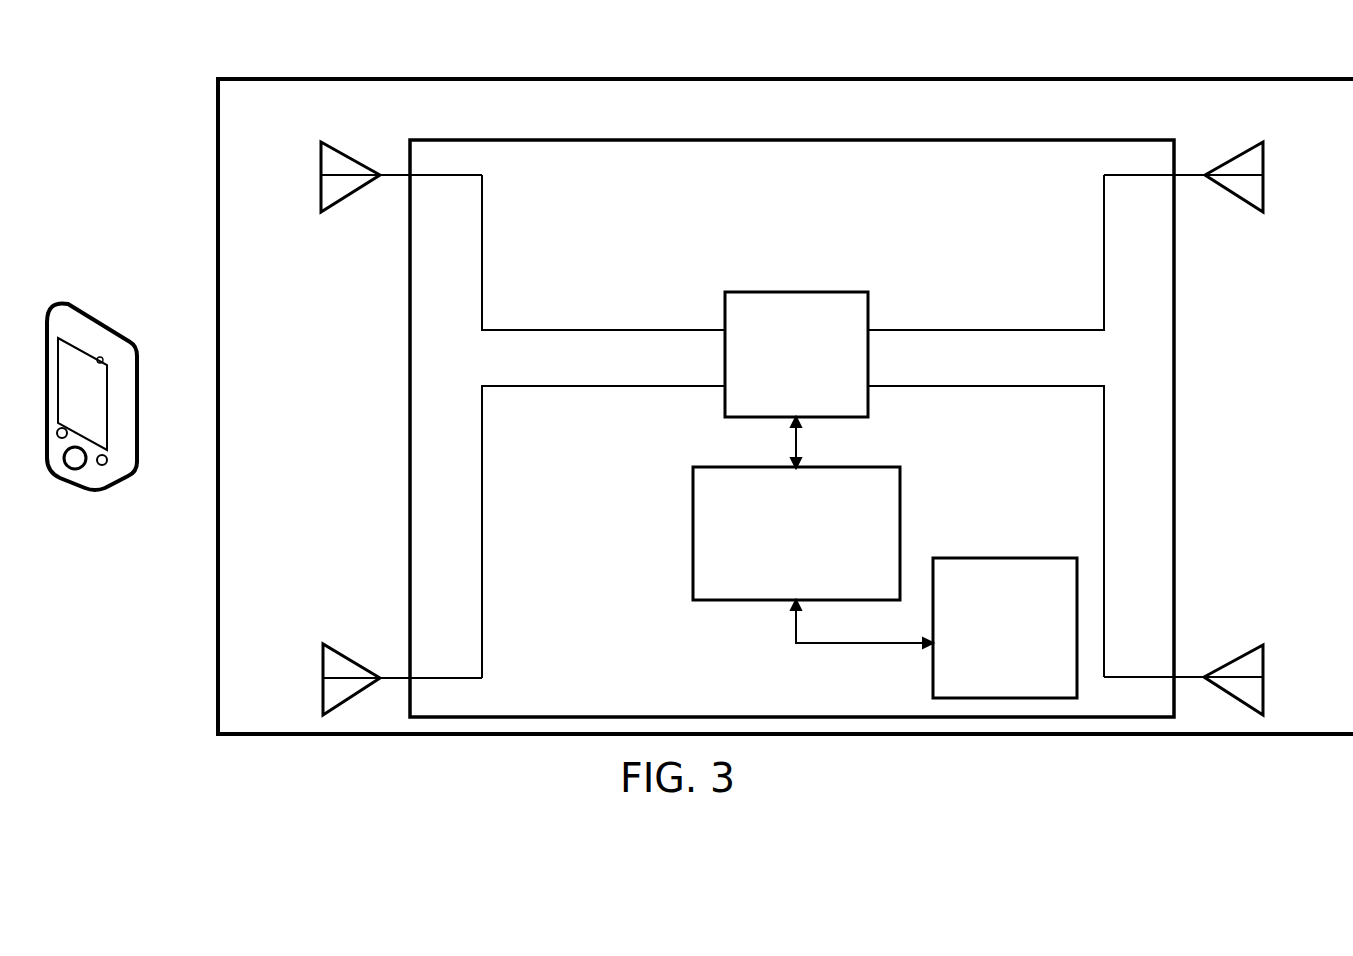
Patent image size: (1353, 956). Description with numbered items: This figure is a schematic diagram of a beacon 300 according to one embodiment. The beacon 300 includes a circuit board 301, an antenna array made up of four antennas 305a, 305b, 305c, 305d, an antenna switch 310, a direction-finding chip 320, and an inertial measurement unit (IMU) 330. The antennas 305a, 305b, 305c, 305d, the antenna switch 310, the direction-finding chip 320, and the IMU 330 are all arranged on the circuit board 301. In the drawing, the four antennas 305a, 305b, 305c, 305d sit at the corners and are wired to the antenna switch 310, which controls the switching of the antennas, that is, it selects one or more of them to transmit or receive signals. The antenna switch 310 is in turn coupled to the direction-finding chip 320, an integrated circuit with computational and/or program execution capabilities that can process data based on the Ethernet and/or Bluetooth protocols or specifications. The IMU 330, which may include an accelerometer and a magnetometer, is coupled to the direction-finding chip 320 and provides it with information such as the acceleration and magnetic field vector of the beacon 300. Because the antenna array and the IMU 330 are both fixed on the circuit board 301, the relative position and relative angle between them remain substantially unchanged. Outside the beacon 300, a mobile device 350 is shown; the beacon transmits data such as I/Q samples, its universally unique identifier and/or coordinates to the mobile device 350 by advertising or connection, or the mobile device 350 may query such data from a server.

The beacon 300 is at (218, 734).
The circuit board 301 is at (577, 700).
The antenna 305a is at (321, 142).
The antenna 305b is at (323, 645).
The antenna 305c is at (1263, 142).
The antenna 305d is at (1263, 645).
The antenna switch 310 is at (817, 410).
The direction-finding chip 320 is at (817, 591).
The inertial measurement unit (IMU) 330 is at (1027, 665).
The mobile device 350 is at (85, 323).